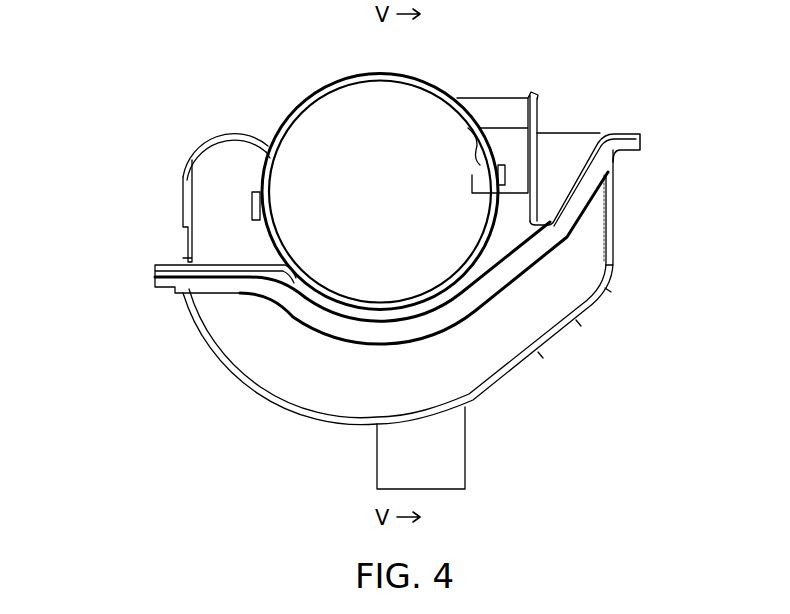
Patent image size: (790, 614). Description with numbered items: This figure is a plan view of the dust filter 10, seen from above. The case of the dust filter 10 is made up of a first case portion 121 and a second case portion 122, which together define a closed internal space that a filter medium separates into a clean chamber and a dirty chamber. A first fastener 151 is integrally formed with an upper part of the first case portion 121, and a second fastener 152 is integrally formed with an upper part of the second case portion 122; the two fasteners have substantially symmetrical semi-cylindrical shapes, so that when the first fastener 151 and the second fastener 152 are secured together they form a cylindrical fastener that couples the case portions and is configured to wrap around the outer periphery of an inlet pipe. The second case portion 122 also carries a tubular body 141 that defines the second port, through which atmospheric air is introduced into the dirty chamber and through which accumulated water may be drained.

The dust filter 10 is at (584, 79).
The first case portion 121 is at (217, 140).
The second case portion 122 is at (539, 352).
The tubular body 141 is at (467, 455).
The first fastener 151 is at (368, 310).
The second fastener 152 is at (303, 100).